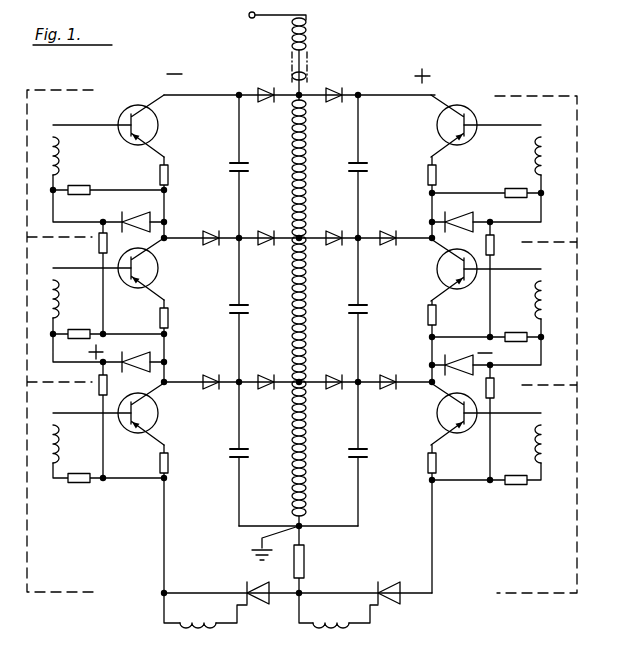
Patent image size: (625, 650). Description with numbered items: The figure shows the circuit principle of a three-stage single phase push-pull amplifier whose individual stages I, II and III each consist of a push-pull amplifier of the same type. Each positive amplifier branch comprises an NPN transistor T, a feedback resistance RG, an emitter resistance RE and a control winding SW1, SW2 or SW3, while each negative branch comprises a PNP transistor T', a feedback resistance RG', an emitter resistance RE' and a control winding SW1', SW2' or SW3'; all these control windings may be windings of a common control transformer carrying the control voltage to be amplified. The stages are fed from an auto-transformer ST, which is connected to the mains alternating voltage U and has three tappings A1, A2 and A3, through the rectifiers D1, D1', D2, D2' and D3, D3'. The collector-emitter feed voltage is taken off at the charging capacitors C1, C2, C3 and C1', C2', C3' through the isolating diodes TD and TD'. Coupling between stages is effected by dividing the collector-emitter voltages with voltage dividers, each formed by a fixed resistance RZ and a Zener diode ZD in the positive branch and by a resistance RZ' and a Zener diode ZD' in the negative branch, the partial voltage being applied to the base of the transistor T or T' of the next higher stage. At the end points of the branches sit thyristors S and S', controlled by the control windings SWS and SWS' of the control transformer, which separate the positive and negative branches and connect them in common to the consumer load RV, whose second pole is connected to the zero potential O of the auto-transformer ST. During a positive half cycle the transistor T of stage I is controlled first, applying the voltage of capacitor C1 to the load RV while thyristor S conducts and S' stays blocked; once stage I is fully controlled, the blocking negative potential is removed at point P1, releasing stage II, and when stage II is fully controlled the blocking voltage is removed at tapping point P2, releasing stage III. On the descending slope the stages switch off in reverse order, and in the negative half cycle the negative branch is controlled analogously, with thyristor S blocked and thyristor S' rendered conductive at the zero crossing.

The PNP transistor T' is at (145, 270).
The NPN transistor T is at (447, 270).
The control winding SW3' is at (76, 156).
The control winding SW2' is at (99, 299).
The control winding SW1' is at (76, 441).
The control winding SW3 is at (518, 156).
The control winding SW2 is at (518, 299).
The control winding SW1 is at (518, 443).
The emitter resistance RE' is at (90, 326).
The emitter resistance RE is at (507, 328).
The feedback resistance RG' is at (179, 318).
The feedback resistance RG is at (446, 318).
The Zener diode ZD' is at (151, 286).
The Zener diode ZD is at (474, 287).
The resistance RZ' is at (86, 350).
The fixed resistance RZ is at (503, 351).
The isolating diode TD' is at (213, 299).
The isolating diode TD is at (386, 300).
The rectifier D3' is at (261, 84).
The rectifier D2' is at (267, 228).
The rectifier D1' is at (267, 371).
The rectifier D3 is at (333, 84).
The rectifier D2 is at (333, 228).
The rectifier D1 is at (333, 371).
The charging capacitor C3' is at (249, 166).
The charging capacitor C2' is at (249, 310).
The charging capacitor C1' is at (249, 454).
The charging capacitor C3 is at (367, 166).
The charging capacitor C2 is at (367, 310).
The charging capacitor C1 is at (367, 454).
The tapping A3 is at (300, 97).
The tapping A2 is at (300, 240).
The tapping A1 is at (300, 384).
The auto-transformer ST is at (308, 46).
The mains alternating voltage U is at (256, 16).
The tapping point P2 is at (490, 222).
The point P1 is at (490, 365).
The consumer load RV is at (312, 561).
The zero potential O is at (267, 547).
The thyristor S' is at (258, 606).
The thyristor S is at (389, 603).
The control winding SWS' is at (205, 621).
The control winding SWS is at (338, 621).
The amplifier stage I is at (563, 403).
The amplifier stage II is at (560, 255).
The amplifier stage III is at (559, 110).